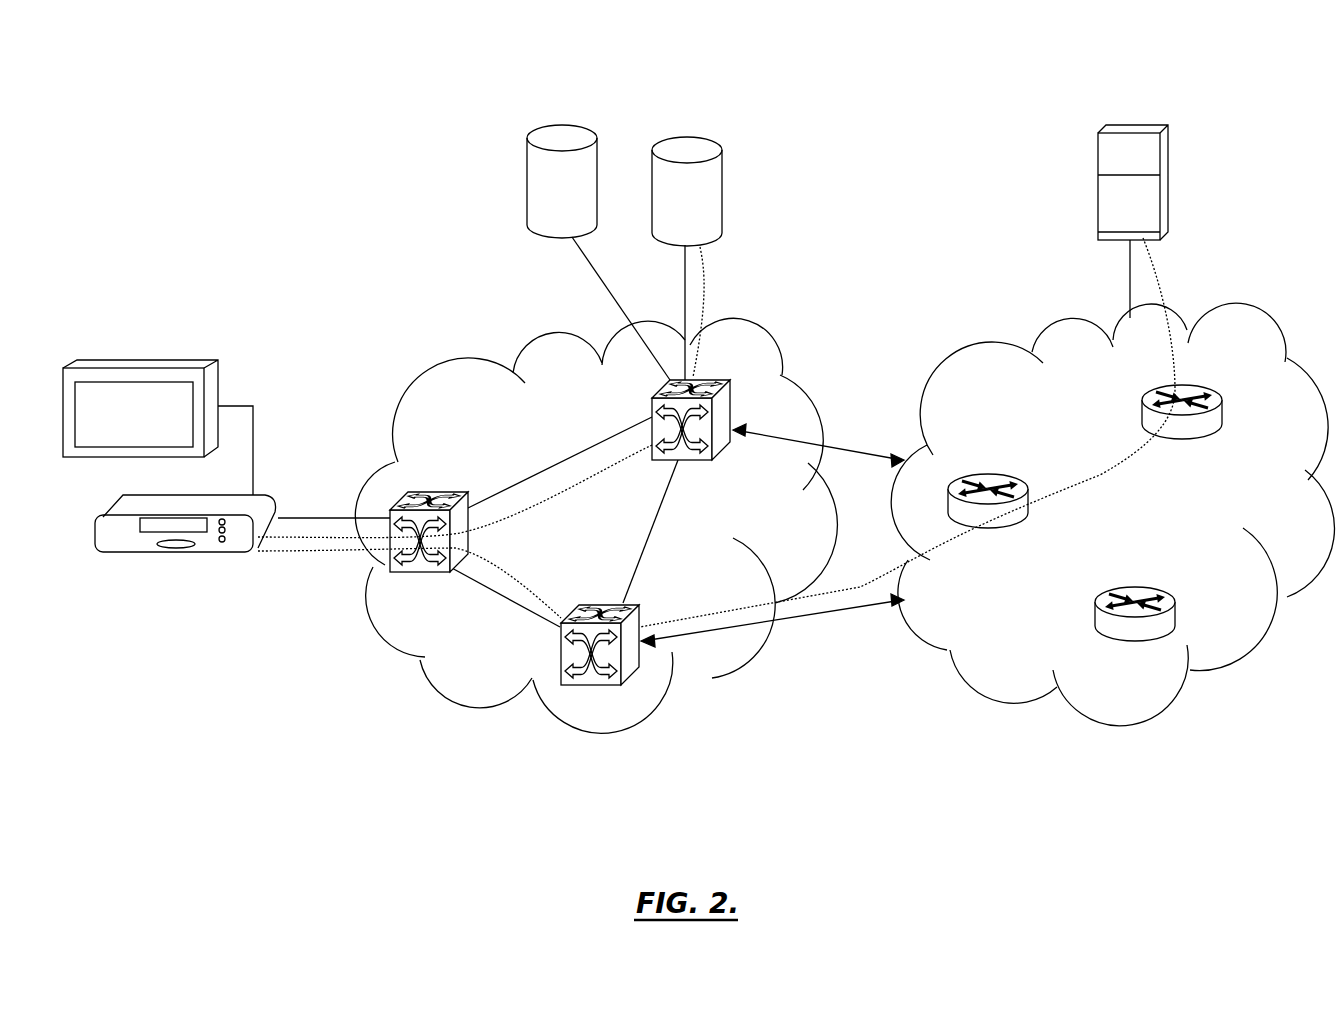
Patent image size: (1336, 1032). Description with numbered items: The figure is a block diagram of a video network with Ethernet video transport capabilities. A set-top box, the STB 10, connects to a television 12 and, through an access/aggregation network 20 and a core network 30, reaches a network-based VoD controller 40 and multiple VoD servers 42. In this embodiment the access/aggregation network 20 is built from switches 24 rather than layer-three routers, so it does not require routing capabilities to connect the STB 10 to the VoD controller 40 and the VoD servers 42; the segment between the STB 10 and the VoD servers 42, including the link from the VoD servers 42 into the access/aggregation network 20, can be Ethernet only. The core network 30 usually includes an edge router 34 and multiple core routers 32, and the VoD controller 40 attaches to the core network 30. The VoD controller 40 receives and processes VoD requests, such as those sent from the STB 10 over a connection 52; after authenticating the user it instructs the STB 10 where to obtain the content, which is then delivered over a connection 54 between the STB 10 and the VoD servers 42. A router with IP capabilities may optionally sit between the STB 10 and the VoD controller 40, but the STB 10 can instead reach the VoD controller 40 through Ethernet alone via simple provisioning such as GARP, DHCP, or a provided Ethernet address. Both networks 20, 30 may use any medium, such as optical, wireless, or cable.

The STB 10 is at (138, 553).
The television 12 is at (163, 360).
The access/aggregation network 20 is at (490, 710).
The switches 24 is at (428, 493).
The core network 30 is at (1002, 702).
The core routers 32 is at (1188, 440).
The edge router 34 is at (987, 528).
The VoD controller 40 is at (1132, 125).
The VoD servers 42 is at (562, 137).
The connection 52 is at (852, 590).
The connection 54 is at (707, 295).